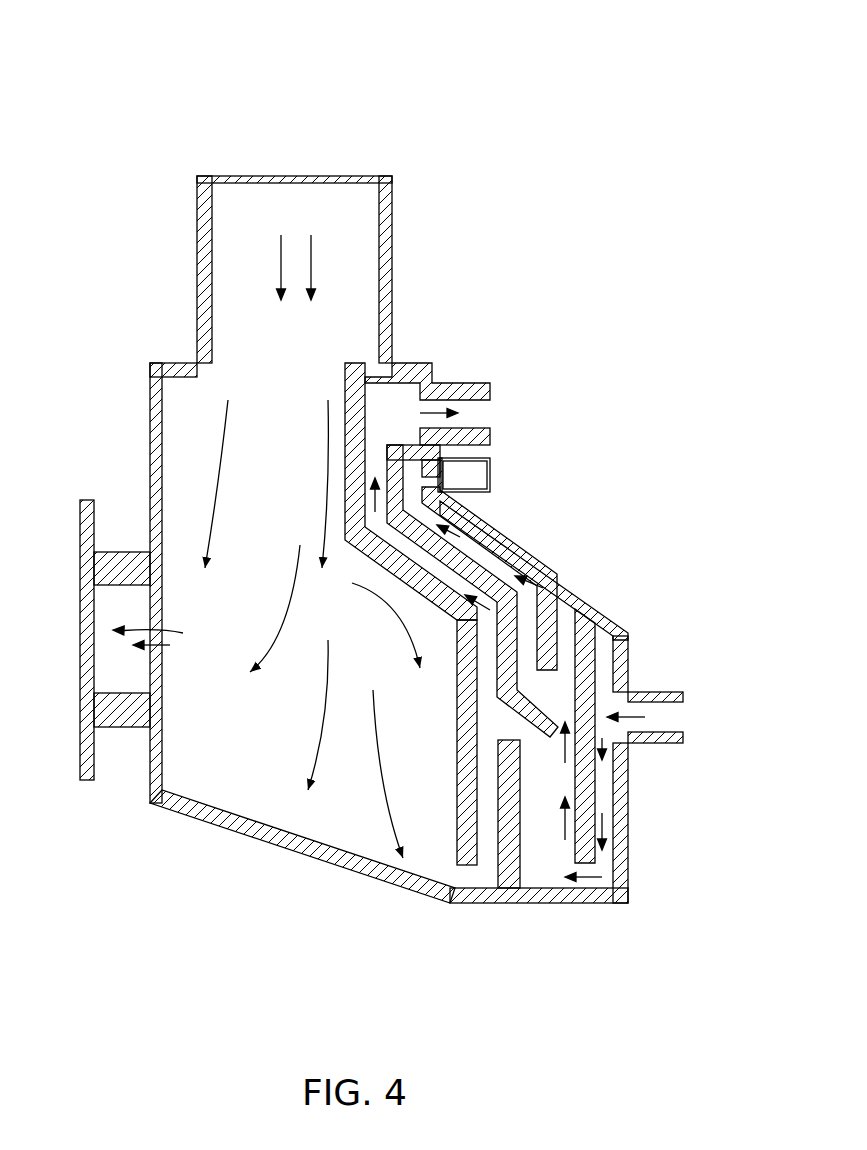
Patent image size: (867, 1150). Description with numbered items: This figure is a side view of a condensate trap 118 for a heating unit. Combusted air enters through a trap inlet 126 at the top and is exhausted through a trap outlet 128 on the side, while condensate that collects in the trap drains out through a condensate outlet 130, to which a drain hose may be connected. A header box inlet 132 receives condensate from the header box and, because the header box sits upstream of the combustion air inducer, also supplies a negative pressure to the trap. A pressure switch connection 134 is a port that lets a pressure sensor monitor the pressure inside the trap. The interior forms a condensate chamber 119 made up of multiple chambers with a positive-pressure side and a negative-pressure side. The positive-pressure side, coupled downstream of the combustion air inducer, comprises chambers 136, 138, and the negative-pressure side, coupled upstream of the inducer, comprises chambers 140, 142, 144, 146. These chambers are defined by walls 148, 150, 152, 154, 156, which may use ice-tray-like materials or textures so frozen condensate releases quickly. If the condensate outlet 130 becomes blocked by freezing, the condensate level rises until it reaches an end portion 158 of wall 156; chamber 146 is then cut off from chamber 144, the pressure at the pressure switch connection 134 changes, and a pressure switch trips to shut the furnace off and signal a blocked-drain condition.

The condensate trap 118 is at (108, 78).
The condensate chamber 119 is at (158, 386).
The trap inlet 126 is at (393, 181).
The trap outlet 128 is at (86, 738).
The condensate outlet 130 is at (690, 699).
The header box inlet 132 is at (486, 381).
The pressure switch connection 134 is at (484, 476).
The chamber 136 is at (272, 824).
The chamber 138 is at (492, 878).
The chamber 140 is at (568, 886).
The chamber 142 is at (612, 861).
The chamber 144 is at (431, 368).
The chamber 146 is at (568, 603).
The wall 148 is at (470, 796).
The wall 150 is at (524, 890).
The wall 152 is at (590, 808).
The wall 154 is at (513, 698).
The wall 156 is at (498, 578).
The end portion 158 is at (550, 648).